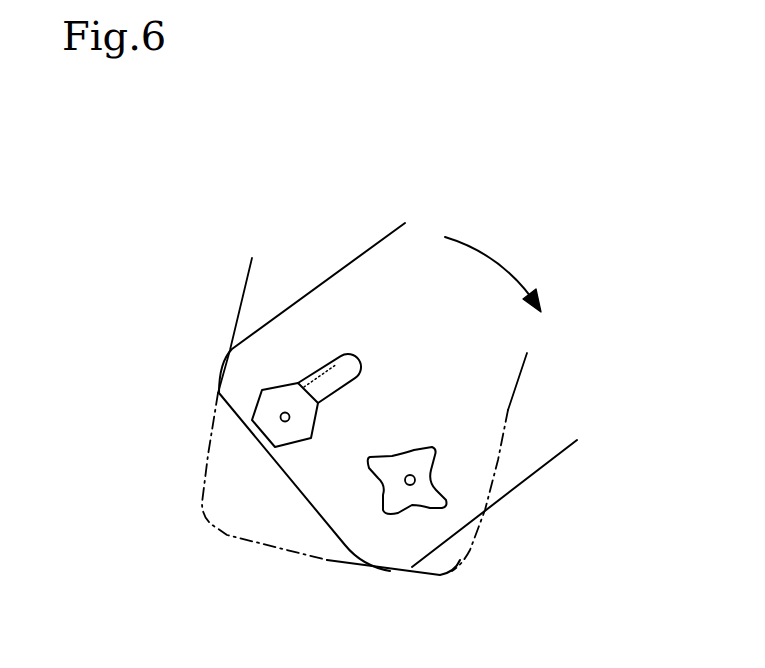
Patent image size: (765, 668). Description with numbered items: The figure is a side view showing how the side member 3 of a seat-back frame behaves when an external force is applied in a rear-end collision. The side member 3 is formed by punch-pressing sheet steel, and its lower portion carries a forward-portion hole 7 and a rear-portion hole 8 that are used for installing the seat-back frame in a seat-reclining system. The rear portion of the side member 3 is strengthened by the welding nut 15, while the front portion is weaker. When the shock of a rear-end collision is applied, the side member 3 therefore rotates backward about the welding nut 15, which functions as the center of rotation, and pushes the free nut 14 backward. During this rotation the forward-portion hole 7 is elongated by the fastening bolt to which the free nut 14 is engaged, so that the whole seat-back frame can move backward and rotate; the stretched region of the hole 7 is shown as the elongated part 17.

The side member 3 is at (243, 297).
The forward-portion hole 7 is at (280, 414).
The rear-portion hole 8 is at (416, 479).
The free nut 14 is at (265, 433).
The welding nut 15 is at (418, 496).
The elongated part of the hole 17 is at (328, 354).